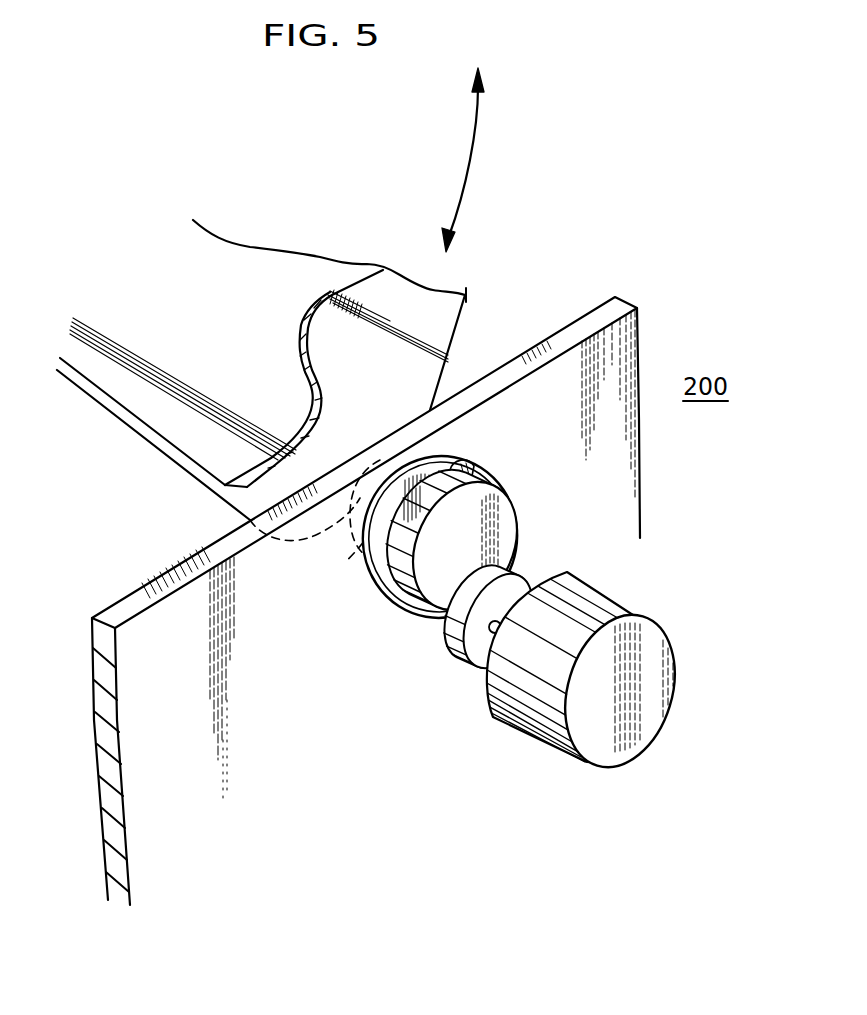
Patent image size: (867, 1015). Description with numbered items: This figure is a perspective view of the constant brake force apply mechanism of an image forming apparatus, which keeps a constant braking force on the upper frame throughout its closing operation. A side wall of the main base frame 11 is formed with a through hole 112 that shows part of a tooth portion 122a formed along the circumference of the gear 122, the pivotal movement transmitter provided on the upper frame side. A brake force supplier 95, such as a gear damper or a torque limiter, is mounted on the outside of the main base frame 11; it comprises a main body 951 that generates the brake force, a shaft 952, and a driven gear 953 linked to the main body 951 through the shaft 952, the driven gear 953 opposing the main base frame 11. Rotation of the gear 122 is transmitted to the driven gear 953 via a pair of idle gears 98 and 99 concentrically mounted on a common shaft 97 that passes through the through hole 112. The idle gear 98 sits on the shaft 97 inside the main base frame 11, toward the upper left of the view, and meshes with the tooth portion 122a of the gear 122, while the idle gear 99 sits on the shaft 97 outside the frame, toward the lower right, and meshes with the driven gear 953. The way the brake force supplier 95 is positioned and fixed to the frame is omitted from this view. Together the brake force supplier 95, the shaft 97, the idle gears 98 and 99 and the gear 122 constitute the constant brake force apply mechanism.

The main base frame 11 is at (578, 328).
The gear 122 is at (311, 370).
The tooth portion 122a is at (458, 337).
The idle gear 98 is at (347, 546).
The shaft 97 is at (370, 595).
The through hole 112 is at (461, 461).
The idle gear 99 is at (443, 572).
The driven gear 953 is at (523, 567).
The shaft 952 is at (495, 633).
The main body 951 is at (598, 610).
The brake force supplier 95 is at (599, 721).